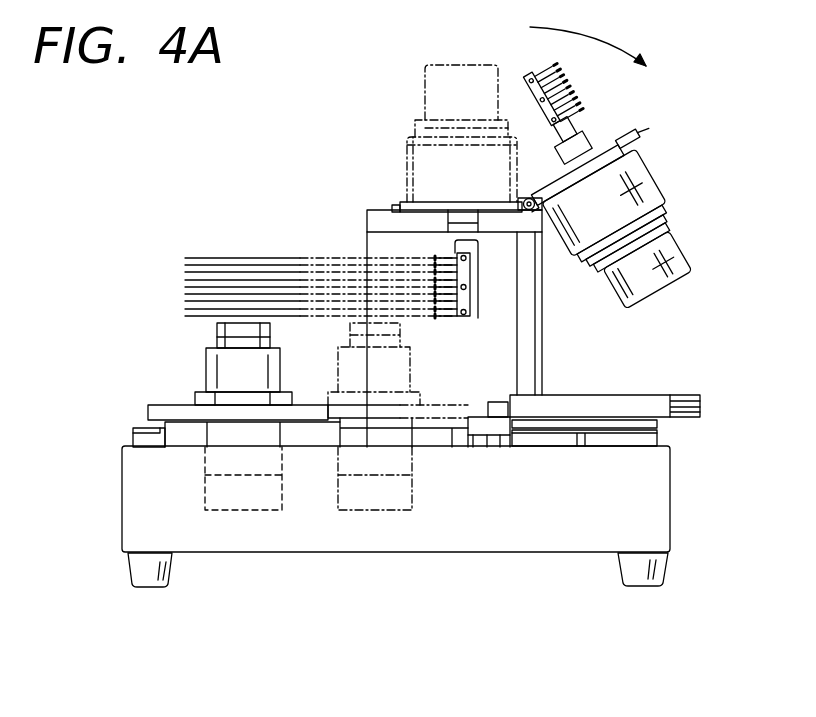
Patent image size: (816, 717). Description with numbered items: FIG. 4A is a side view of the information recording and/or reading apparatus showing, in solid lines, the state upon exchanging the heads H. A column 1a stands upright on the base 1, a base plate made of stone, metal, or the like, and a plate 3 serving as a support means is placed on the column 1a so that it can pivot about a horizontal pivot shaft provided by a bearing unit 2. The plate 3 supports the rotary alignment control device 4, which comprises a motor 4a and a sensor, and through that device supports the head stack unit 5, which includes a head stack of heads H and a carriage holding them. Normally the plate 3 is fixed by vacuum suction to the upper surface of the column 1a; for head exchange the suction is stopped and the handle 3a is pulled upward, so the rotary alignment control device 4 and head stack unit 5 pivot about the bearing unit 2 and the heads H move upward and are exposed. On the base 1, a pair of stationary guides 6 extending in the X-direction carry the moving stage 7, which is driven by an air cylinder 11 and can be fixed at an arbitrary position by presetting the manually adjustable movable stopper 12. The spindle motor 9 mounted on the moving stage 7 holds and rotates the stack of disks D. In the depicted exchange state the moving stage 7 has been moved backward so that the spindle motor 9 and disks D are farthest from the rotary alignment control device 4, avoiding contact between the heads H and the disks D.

The base 1 is at (635, 502).
The column 1a is at (375, 222).
The bearing unit 2 is at (530, 234).
The plate 3 is at (622, 138).
The handle 3a is at (645, 128).
The rotary alignment control device 4 is at (742, 137).
The motor 4a is at (645, 178).
The head stack unit 5 is at (560, 57).
The stationary guides 6 is at (658, 431).
The moving stage 7 is at (148, 410).
The spindle motor 9 is at (243, 435).
The air cylinder 11 is at (617, 402).
The movable stopper 12 is at (485, 427).
The disks D is at (190, 257).
The heads H is at (552, 64).